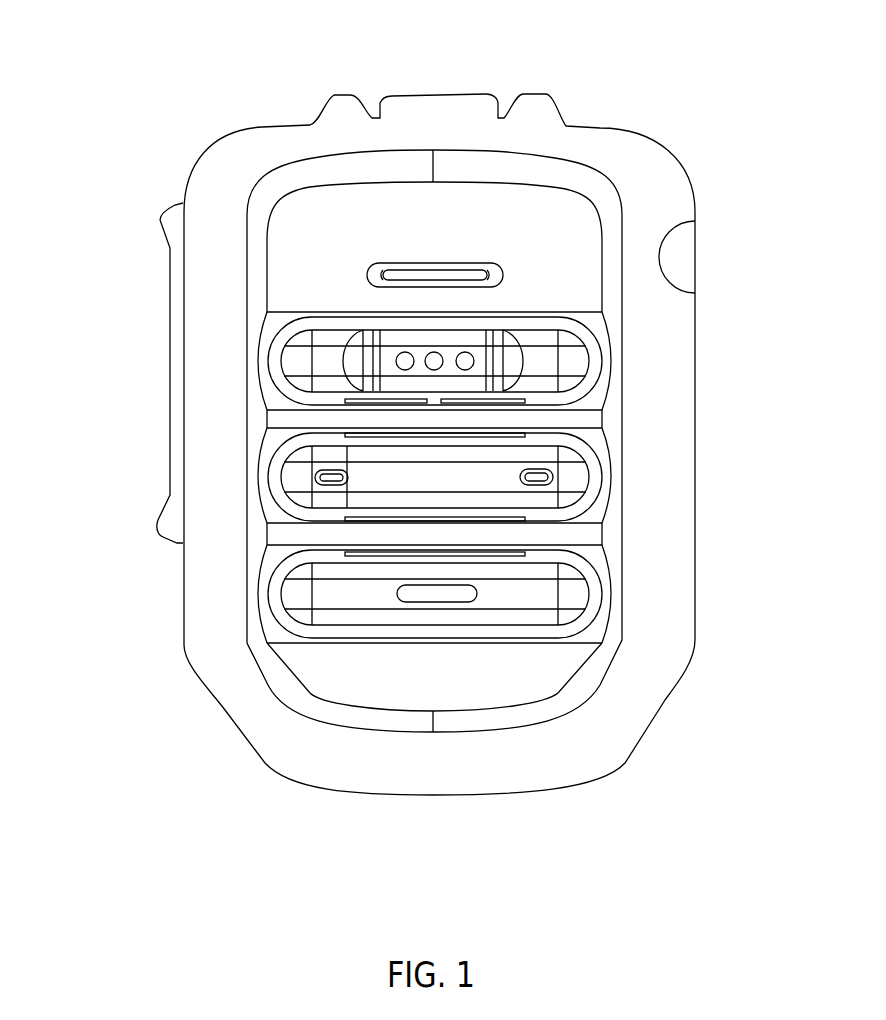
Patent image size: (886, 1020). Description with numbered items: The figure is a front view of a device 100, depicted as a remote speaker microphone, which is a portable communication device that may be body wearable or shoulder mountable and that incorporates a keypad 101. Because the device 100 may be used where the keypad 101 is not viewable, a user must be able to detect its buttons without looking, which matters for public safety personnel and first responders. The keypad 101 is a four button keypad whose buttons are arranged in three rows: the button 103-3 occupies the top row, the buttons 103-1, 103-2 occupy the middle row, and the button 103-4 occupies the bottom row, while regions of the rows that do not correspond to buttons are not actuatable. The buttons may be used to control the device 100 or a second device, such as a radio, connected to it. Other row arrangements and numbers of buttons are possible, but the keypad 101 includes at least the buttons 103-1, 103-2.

The device 100 is at (97, 47).
The keypad 101 is at (248, 361).
The button 103-1 is at (293, 482).
The button 103-2 is at (568, 480).
The button 103-3 is at (395, 338).
The button 103-4 is at (423, 598).